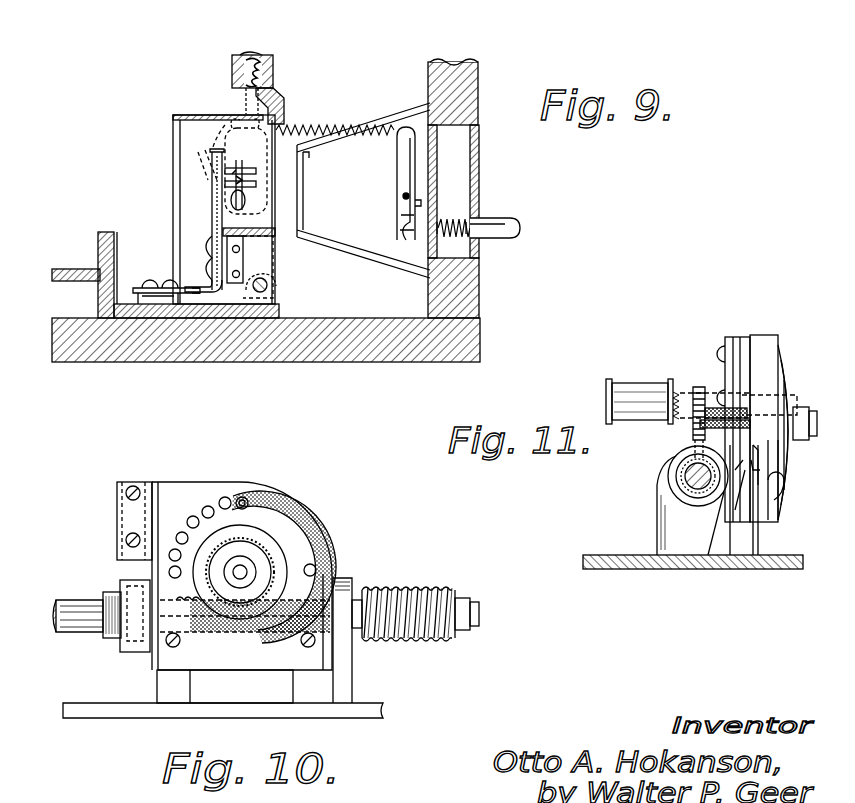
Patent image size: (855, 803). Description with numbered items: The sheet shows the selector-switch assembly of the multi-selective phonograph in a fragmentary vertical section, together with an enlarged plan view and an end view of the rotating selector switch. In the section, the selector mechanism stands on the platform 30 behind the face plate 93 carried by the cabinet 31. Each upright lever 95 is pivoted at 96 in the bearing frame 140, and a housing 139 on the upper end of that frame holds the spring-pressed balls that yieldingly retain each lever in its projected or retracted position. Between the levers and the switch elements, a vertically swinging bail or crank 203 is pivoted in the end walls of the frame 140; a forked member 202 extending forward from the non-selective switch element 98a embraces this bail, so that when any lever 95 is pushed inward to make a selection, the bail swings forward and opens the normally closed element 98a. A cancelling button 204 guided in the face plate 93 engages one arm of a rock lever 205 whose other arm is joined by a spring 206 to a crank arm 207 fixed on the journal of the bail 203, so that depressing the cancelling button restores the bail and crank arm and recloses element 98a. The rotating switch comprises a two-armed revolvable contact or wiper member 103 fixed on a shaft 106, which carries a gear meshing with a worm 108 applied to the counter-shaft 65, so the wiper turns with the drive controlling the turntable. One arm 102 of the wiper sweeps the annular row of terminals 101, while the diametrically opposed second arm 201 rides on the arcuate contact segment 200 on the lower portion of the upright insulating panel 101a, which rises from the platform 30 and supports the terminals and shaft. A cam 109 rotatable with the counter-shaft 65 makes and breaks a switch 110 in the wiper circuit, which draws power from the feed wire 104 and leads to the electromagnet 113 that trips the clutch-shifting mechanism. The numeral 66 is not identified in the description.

In FIG. 9, the platform 30 is at (72, 262).
In FIG. 10, the platform 30 is at (254, 704).
In FIG. 11, the platform 30 is at (672, 570).
In FIG. 9, the cabinet 31 is at (480, 310).
In FIG. 10, the counter-shaft 65 is at (74, 632).
In FIG. 11, the counter-shaft 65 is at (688, 478).
In FIG. 10, the worm shaft 66 is at (438, 636).
In FIG. 9, the face plate 93 is at (480, 172).
In FIG. 9, the upright lever 95 is at (278, 260).
In FIG. 9, the pivot 96 is at (268, 283).
In FIG. 9, the non-selective switch element 98a is at (212, 152).
In FIG. 10, the terminal 101 is at (168, 570).
In FIG. 11, the upright insulating panel 101a is at (760, 335).
In FIG. 10, the arm 102 is at (266, 506).
In FIG. 11, the arm 102 is at (783, 350).
In FIG. 10, the revolvable contact or wiper member 103 is at (266, 562).
In FIG. 11, the revolvable contact or wiper member 103 is at (795, 504).
In FIG. 11, the feed wire 104 is at (698, 387).
In FIG. 10, the shaft 106 is at (240, 572).
In FIG. 11, the shaft 106 is at (693, 420).
In FIG. 10, the worm 108 is at (245, 640).
In FIG. 11, the worm 108 is at (682, 502).
In FIG. 10, the cam 109 is at (103, 592).
In FIG. 11, the cam 109 is at (682, 458).
In FIG. 10, the switch 110 is at (132, 662).
In FIG. 11, the switch 110 is at (730, 520).
In FIG. 11, the electromagnet 113 is at (639, 390).
In FIG. 9, the housing 139 is at (264, 56).
In FIG. 9, the bearing frame 140 is at (197, 117).
In FIG. 10, the arcuate contact segment 200 is at (245, 616).
In FIG. 11, the arcuate contact segment 200 is at (772, 500).
In FIG. 10, the second arm 201 is at (210, 533).
In FIG. 11, the second arm 201 is at (770, 492).
In FIG. 9, the forked member 202 is at (256, 170).
In FIG. 9, the bail or crank 203 is at (256, 184).
In FIG. 9, the cancelling rod or button 204 is at (520, 228).
In FIG. 9, the rock lever 205 is at (392, 150).
In FIG. 9, the spring 206 is at (326, 130).
In FIG. 9, the crank arm 207 is at (290, 108).